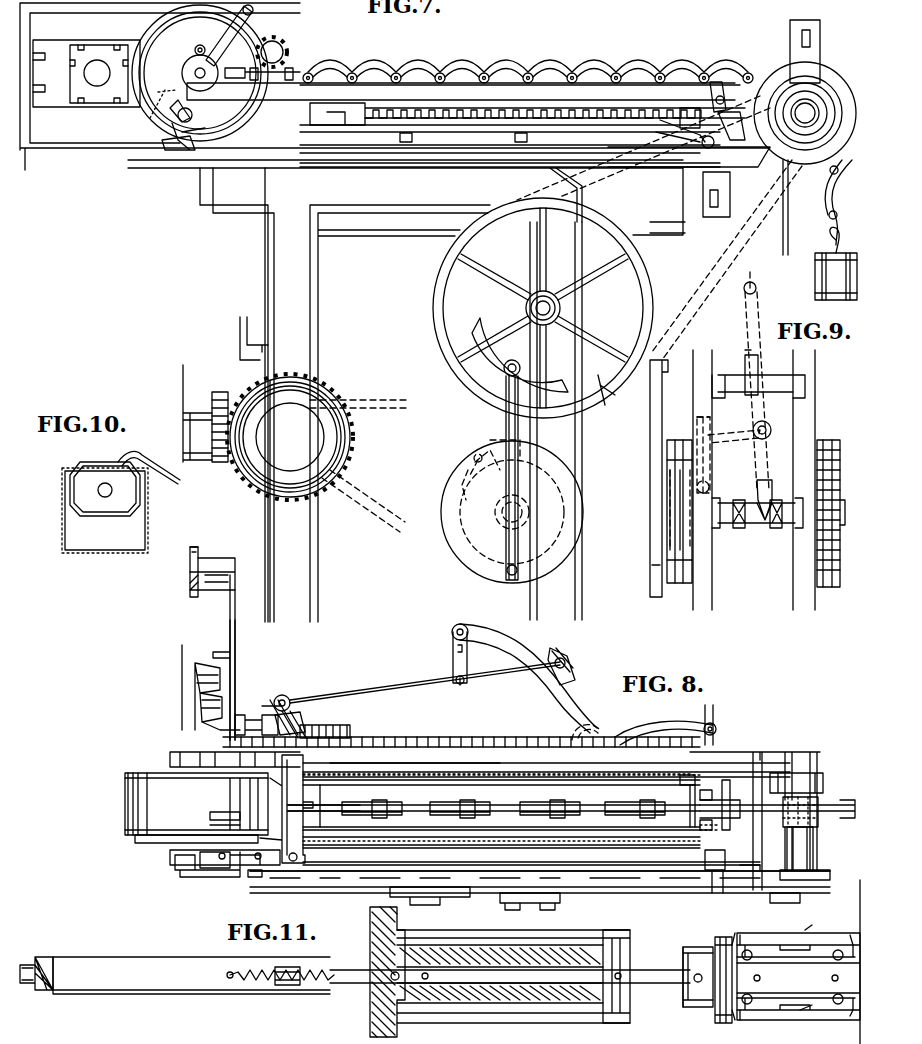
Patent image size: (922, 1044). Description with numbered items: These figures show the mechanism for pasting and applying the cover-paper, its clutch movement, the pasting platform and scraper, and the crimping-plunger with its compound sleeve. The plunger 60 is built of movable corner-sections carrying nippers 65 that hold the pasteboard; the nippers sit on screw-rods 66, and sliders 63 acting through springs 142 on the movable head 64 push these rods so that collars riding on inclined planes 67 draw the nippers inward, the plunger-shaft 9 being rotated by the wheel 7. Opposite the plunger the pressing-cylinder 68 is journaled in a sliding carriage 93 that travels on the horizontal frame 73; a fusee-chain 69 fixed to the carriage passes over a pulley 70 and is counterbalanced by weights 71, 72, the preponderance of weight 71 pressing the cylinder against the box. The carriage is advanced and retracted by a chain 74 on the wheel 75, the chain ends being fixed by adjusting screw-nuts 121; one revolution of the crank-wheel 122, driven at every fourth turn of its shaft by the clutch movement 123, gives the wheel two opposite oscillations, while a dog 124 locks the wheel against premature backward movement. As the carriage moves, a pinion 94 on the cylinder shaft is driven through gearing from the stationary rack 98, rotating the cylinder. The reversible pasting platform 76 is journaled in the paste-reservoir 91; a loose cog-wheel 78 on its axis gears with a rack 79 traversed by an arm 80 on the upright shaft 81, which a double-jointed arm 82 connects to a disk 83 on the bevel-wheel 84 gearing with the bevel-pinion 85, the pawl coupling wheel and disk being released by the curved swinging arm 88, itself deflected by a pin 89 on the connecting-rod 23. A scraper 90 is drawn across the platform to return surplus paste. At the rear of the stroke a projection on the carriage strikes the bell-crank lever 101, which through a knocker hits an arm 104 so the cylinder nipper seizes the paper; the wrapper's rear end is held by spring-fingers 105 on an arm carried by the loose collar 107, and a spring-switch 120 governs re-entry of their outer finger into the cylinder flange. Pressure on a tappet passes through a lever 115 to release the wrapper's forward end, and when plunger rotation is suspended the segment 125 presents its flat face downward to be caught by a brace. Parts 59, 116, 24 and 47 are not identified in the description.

In FIG. 7, the base plate 59 is at (86, 67).
In FIG. 7, the plunger 60 is at (99, 74).
In FIG. 11, the plunger 60 is at (798, 962).
In FIG. 7, the pressing-cylinder 68 is at (200, 73).
In FIG. 8, the pressing-cylinder 68 is at (196, 801).
In FIG. 7, the loose collar 107 is at (230, 79).
In FIG. 7, the spring-fingers 105 is at (224, 35).
In FIG. 8, the spring-fingers 105 is at (222, 819).
In FIG. 7, the pawl 116 is at (170, 97).
In FIG. 7, the arm 104 is at (166, 124).
In FIG. 7, the horizontal frame 73 is at (463, 118).
In FIG. 8, the horizontal frame 73 is at (415, 806).
In FIG. 7, the stationary rack 98 is at (527, 114).
In FIG. 8, the stationary rack 98 is at (461, 736).
In FIG. 7, the scraper 90 is at (510, 150).
In FIG. 10, the scraper 90 is at (149, 466).
In FIG. 8, the scraper 90 is at (496, 774).
In FIG. 7, the lever 115 is at (256, 76).
In FIG. 8, the lever 115 is at (240, 860).
In FIG. 7, the fusee-chain 69 is at (528, 68).
In FIG. 8, the fusee-chain 69 is at (494, 806).
In FIG. 7, the bell-crank lever 101 is at (700, 113).
In FIG. 7, the pulley 70 is at (805, 92).
In FIG. 8, the pulley 70 is at (808, 826).
In FIG. 7, the chain 74 is at (659, 228).
In FIG. 7, the weight 71 is at (812, 207).
In FIG. 7, the weight 72 is at (836, 263).
In FIG. 7, the wheel 75 is at (543, 308).
In FIG. 8, the wheel 75 is at (544, 890).
In FIG. 7, the adjusting screw-nuts 121 is at (558, 368).
In FIG. 7, the dog 124 is at (494, 470).
In FIG. 7, the spring-switch 120 is at (512, 511).
In FIG. 7, the bevel-wheel 84 is at (318, 453).
In FIG. 8, the bevel-wheel 84 is at (325, 725).
In FIG. 7, the bevel-pinion 85 is at (205, 413).
In FIG. 7, the bracket 24 is at (212, 572).
In FIG. 7, the connecting-rod 23 is at (224, 657).
In FIG. 9, the segment 125 is at (723, 396).
In FIG. 9, the crank-wheel 122 is at (684, 511).
In FIG. 9, the clutch movement 123 is at (841, 513).
In FIG. 10, the paste-reservoir 91 is at (105, 510).
In FIG. 10, the reversible pasting platform 76 is at (105, 489).
In FIG. 8, the reversible pasting platform 76 is at (675, 809).
In FIG. 8, the curved swinging arm 88 is at (212, 696).
In FIG. 8, the pin 89 is at (266, 714).
In FIG. 8, the disk 83 is at (281, 716).
In FIG. 8, the pinion 94 is at (233, 753).
In FIG. 8, the sliding carriage 93 is at (308, 809).
In FIG. 8, the double-jointed arm 82 is at (443, 678).
In FIG. 8, the upright shaft 81 is at (594, 723).
In FIG. 8, the arm 80 is at (665, 725).
In FIG. 8, the rack 79 is at (755, 816).
In FIG. 8, the loose cog-wheel 78 is at (705, 803).
In FIG. 11, the plunger-shaft 9 is at (191, 975).
In FIG. 11, the end cap 47 is at (36, 970).
In FIG. 11, the wheel 7 is at (382, 972).
In FIG. 11, the sliders 63 is at (513, 976).
In FIG. 11, the springs 142 is at (510, 976).
In FIG. 11, the movable head 64 is at (707, 980).
In FIG. 11, the nippers 65 is at (808, 980).
In FIG. 11, the nipper-rods 66 is at (790, 974).
In FIG. 11, the inclined planes 67 is at (804, 979).